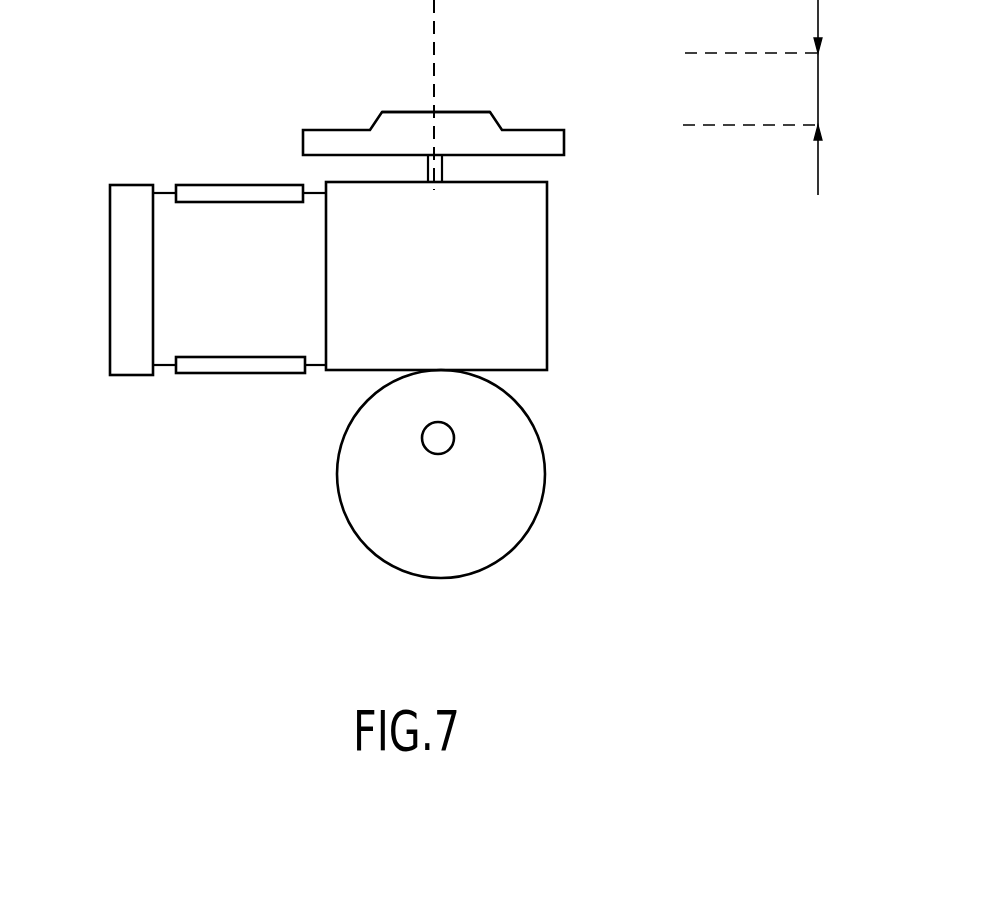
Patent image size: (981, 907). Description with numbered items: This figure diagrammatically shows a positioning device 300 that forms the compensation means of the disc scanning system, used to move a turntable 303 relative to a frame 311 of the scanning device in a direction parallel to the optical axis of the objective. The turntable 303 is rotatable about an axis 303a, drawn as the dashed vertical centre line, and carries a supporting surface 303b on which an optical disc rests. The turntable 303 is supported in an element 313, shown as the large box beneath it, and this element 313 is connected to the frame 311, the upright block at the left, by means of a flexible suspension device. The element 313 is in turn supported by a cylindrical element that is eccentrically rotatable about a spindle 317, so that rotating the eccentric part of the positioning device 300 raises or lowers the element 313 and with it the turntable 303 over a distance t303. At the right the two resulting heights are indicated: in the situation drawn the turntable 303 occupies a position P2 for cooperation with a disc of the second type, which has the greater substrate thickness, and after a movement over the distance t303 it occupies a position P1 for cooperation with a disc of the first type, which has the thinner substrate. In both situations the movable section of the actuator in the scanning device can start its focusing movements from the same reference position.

The positioning device 300 is at (612, 467).
The turntable 303 is at (547, 142).
The axis 303a is at (436, 32).
The supporting surface 303b is at (533, 128).
The frame 311 is at (132, 363).
The element 313 is at (533, 287).
The spindle 317 is at (443, 437).
The position P1 is at (713, 53).
The position P2 is at (713, 130).
The distance t303 is at (779, 97).